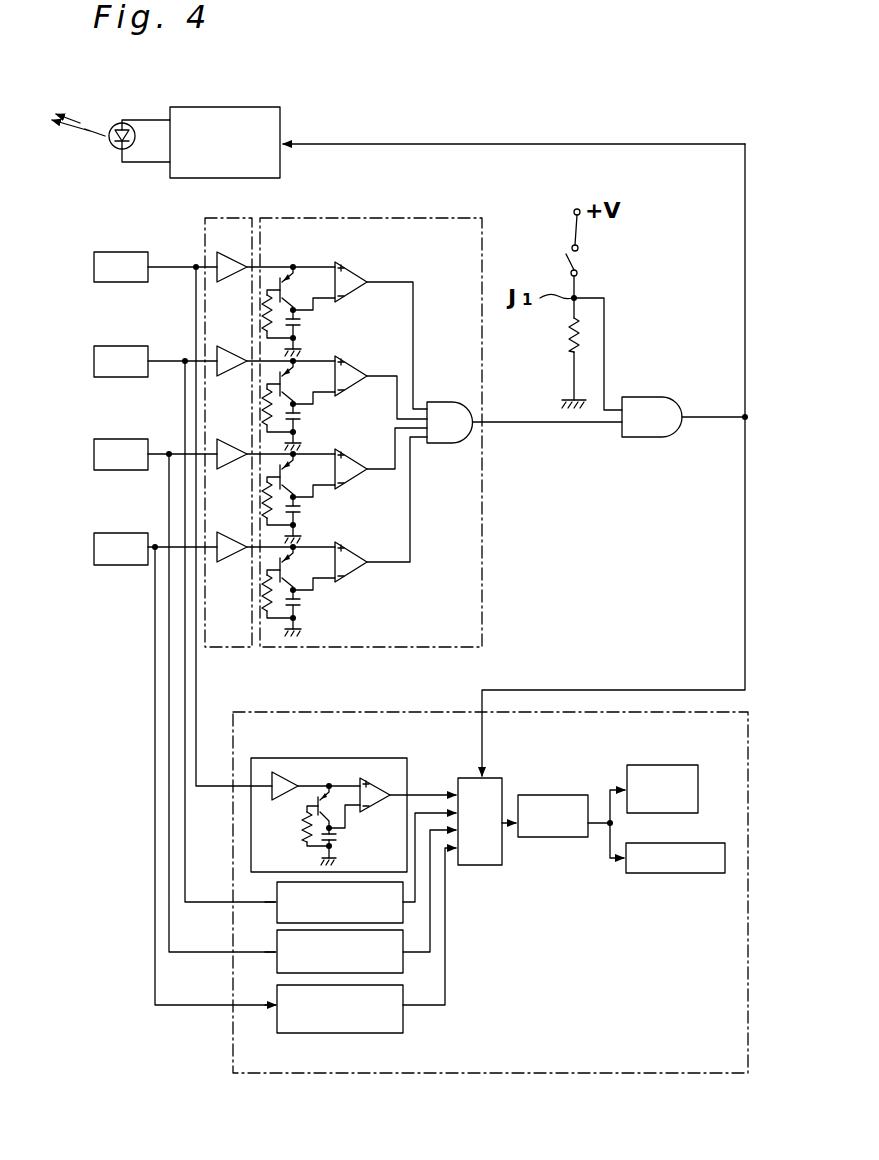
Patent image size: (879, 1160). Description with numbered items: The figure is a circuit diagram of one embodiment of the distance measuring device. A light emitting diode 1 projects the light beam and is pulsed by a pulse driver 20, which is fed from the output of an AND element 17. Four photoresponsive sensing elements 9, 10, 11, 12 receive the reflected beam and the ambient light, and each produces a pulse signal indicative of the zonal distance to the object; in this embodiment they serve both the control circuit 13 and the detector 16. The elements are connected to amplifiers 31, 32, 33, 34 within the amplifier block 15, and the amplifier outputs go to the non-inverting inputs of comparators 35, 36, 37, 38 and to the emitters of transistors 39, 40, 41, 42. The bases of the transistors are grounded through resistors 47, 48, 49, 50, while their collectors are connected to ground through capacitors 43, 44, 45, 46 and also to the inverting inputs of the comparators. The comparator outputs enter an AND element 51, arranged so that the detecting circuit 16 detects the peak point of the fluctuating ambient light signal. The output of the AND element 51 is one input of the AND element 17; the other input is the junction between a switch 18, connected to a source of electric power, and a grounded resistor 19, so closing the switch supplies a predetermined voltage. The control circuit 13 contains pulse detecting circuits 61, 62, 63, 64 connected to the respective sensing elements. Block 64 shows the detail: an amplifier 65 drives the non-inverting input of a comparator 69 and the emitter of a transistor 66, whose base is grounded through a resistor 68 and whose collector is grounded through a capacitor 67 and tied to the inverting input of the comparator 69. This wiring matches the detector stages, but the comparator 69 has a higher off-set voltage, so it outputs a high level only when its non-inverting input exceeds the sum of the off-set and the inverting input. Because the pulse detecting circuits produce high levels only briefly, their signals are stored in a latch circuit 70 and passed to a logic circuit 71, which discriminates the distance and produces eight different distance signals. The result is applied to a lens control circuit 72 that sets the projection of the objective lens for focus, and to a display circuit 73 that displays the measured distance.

The light emitting diode 1 is at (118, 148).
The pulse driver 20 is at (268, 107).
The photoresponsive sensing element 12 is at (103, 282).
The photoresponsive sensing element 11 is at (103, 377).
The photoresponsive sensing element 10 is at (103, 470).
The photoresponsive sensing element 9 is at (103, 565).
The amplifier 15 is at (202, 228).
The detecting circuit 16 is at (407, 218).
The amplifier 34 is at (239, 260).
The amplifier 33 is at (236, 376).
The amplifier 32 is at (236, 469).
The amplifier 31 is at (236, 562).
The transistor 42 is at (294, 286).
The transistor 41 is at (298, 376).
The transistor 40 is at (294, 468).
The transistor 39 is at (292, 562).
The resistor 50 is at (265, 310).
The resistor 49 is at (265, 411).
The resistor 48 is at (265, 504).
The resistor 47 is at (263, 611).
The capacitor 46 is at (302, 323).
The capacitor 45 is at (300, 416).
The capacitor 44 is at (300, 510).
The capacitor 43 is at (295, 607).
The comparator 38 is at (355, 292).
The comparator 37 is at (352, 386).
The comparator 36 is at (352, 480).
The comparator 35 is at (352, 574).
The AND element 51 is at (448, 443).
The switch 18 is at (568, 254).
The grounded resistor 19 is at (568, 340).
The AND element 17 is at (651, 437).
The control circuit 13 is at (226, 1050).
The pulse detecting circuit 64 is at (360, 758).
The amplifier 65 is at (289, 773).
The transistor 66 is at (316, 803).
The capacitor 67 is at (332, 837).
The resistor 68 is at (308, 830).
The comparator 69 is at (368, 806).
The pulse detecting circuit 63 is at (276, 918).
The pulse detecting circuit 62 is at (274, 970).
The pulse detecting circuit 61 is at (274, 1026).
The latch circuit 70 is at (480, 872).
The logic circuit 71 is at (555, 794).
The lens control circuit 72 is at (652, 765).
The display circuit 73 is at (662, 873).